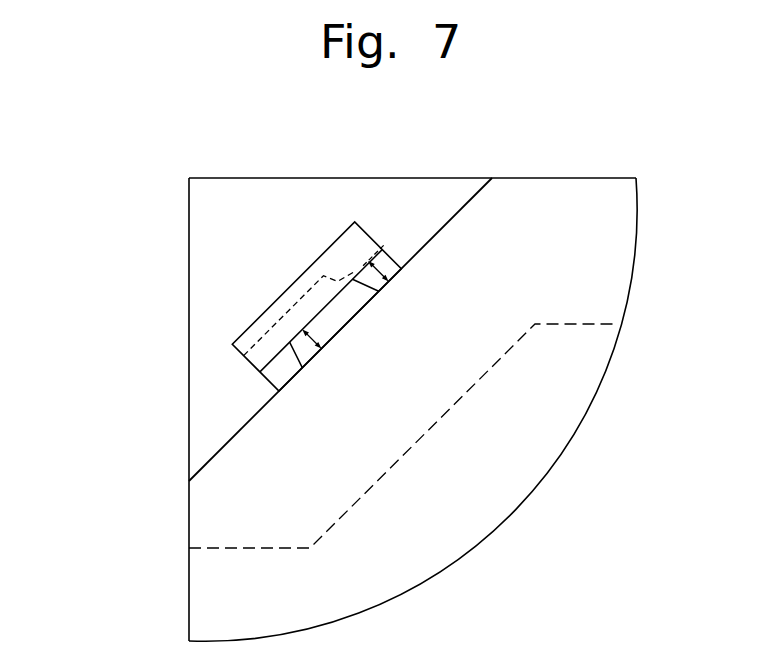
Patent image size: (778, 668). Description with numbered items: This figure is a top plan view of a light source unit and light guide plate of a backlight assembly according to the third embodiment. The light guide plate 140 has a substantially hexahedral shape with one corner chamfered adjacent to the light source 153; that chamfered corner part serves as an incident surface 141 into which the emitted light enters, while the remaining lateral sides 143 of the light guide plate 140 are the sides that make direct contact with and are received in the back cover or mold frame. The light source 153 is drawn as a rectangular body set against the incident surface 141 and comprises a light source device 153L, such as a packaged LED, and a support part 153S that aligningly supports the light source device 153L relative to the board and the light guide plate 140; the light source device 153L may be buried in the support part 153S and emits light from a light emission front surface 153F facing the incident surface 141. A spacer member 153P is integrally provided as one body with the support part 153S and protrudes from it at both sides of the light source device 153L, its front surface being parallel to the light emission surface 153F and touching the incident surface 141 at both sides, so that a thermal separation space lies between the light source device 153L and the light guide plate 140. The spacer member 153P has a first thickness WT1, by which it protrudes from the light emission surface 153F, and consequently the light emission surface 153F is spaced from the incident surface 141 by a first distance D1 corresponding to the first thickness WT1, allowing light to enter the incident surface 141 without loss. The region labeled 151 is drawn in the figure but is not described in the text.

The light guide plate 140 is at (612, 260).
The incident surface 141 is at (349, 323).
The lateral sides 143 is at (562, 177).
The peripheral region 151 is at (215, 231).
The light source 153 is at (218, 260).
The light emission front surface 153F is at (327, 307).
The light source device 153L is at (293, 302).
The support part 153S is at (247, 351).
The spacer member 153P is at (265, 378).
The first distance D1 is at (321, 330).
The first thickness WT1 is at (383, 266).